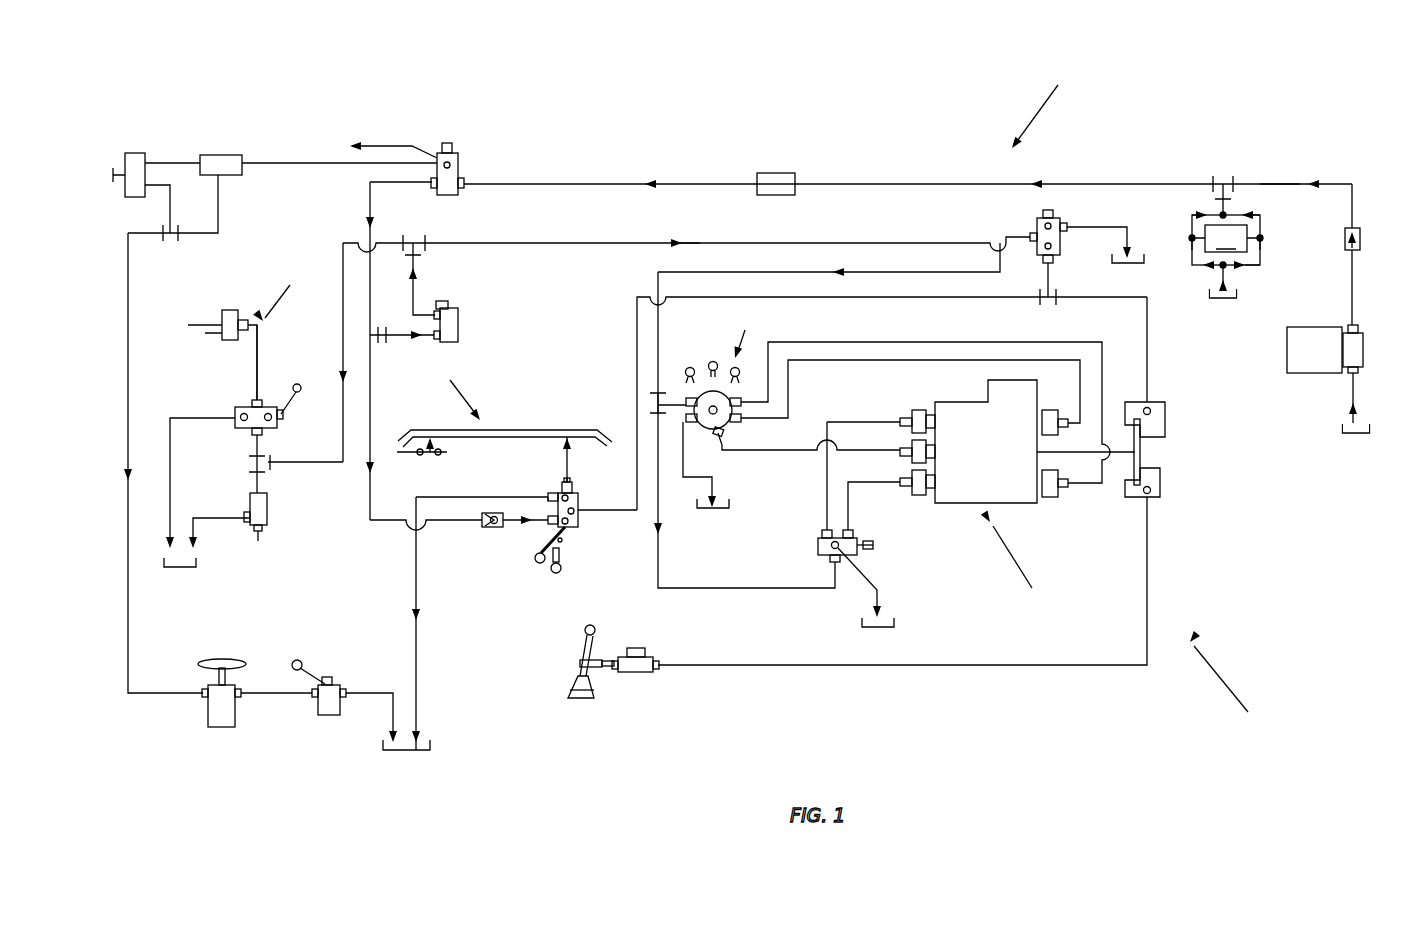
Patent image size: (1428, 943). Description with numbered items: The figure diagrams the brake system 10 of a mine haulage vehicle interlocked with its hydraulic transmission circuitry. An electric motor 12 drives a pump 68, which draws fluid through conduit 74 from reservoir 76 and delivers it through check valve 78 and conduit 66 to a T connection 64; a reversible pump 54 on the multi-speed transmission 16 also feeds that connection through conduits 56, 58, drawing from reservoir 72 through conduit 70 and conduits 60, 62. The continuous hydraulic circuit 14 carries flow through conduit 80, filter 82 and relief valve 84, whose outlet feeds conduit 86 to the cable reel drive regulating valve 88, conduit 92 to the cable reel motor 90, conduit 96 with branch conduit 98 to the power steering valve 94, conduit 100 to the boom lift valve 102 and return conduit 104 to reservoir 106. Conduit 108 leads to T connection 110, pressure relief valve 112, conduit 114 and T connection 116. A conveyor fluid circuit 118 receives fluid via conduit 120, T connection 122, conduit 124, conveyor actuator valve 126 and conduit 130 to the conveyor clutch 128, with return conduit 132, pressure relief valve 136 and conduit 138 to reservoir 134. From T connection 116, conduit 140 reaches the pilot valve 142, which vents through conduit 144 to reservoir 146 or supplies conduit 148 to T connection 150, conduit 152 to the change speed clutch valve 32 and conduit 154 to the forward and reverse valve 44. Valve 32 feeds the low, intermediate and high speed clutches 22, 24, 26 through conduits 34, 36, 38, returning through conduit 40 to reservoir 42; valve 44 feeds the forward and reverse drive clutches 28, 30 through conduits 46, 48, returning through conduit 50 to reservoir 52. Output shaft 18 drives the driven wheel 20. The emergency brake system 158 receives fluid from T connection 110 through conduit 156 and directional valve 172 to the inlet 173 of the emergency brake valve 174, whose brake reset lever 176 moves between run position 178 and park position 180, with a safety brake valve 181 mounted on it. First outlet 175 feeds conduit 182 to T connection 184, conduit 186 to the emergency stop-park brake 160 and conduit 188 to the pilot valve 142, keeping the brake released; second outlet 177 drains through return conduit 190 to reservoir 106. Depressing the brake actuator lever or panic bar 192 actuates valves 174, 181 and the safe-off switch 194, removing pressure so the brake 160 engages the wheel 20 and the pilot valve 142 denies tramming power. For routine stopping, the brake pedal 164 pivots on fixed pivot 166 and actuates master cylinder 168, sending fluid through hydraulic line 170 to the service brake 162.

The hydraulic system 10 is at (1230, 681).
The electric motor 12 is at (1287, 339).
The continuous hydraulic circuit 14 is at (1039, 104).
The multi-speed transmission 16 is at (992, 492).
The output shaft 18 is at (1097, 453).
The driven wheel 20 is at (1142, 456).
The low speed clutch 22 is at (1058, 497).
The intermediate speed clutch 24 is at (1054, 408).
The high speed clutch 26 is at (900, 453).
The forward drive clutch 28 is at (918, 408).
The reverse drive clutch 30 is at (918, 497).
The change speed clutch valve 32 is at (745, 328).
The conduit 34 is at (945, 342).
The conduit 36 is at (843, 361).
The conduit 38 is at (757, 451).
The return conduit 40 is at (686, 430).
The reservoir 42 is at (729, 508).
The forward and reverse valve 44 is at (817, 546).
The conduit 46 is at (826, 502).
The conduit 48 is at (850, 498).
The return conduit 50 is at (881, 596).
The reservoir 52 is at (898, 625).
The pump 54 is at (1226, 240).
The conduit 56 is at (1192, 218).
The conduit 58 is at (1262, 218).
The conduit 60 is at (1190, 240).
The conduit 62 is at (1262, 240).
The T connection 64 is at (1226, 178).
The conduit 66 is at (1275, 183).
The pump 68 is at (1365, 342).
The conduit 70 is at (1228, 268).
The reservoir 72 is at (1222, 300).
The conduit 74 is at (1357, 381).
The reservoir 76 is at (1372, 426).
The check valve 78 is at (1360, 238).
The conduit 80 is at (940, 183).
The filter 82 is at (780, 172).
The relief valve 84 is at (459, 153).
The conduit 86 is at (300, 162).
The cable reel drive regulating valve 88 is at (228, 154).
The cable reel motor 90 is at (136, 152).
The conduit 92 is at (160, 162).
The power steering valve 94 is at (218, 728).
The conduit 96 is at (127, 292).
The branch conduit 98 is at (222, 188).
The conduit 100 is at (281, 695).
The boom lift valve 102 is at (330, 717).
The return conduit 104 is at (371, 690).
The reservoir 106 is at (416, 752).
The conduit 108 is at (368, 198).
The T connection 110 is at (380, 326).
The pressure relief valve 112 is at (458, 316).
The conduit 114 is at (416, 292).
The T connection 116 is at (410, 240).
The fluid circuit 118 is at (280, 287).
The conduit 120 is at (341, 318).
The T connection 122 is at (270, 464).
The conduit 124 is at (255, 440).
The conveyor actuator valve 126 is at (237, 405).
The conveyor clutch 128 is at (215, 310).
The conduit 130 is at (254, 346).
The return conduit 132 is at (168, 450).
The reservoir 134 is at (200, 566).
The pressure relief valve 136 is at (268, 515).
The conduit 138 is at (215, 518).
The conduit 140 is at (778, 242).
The pilot valve 142 is at (1033, 212).
The conduit 144 is at (1079, 228).
The reservoir 146 is at (1130, 266).
The conduit 148 is at (660, 270).
The T connection 150 is at (656, 402).
The conduit 152 is at (686, 401).
The conduit 154 is at (738, 588).
The conduit 156 is at (372, 360).
The emergency brake system 158 is at (454, 388).
The emergency stop-park brake 160 is at (1167, 408).
The service brake 162 is at (1162, 486).
The brake pedal 164 is at (596, 650).
The fixed pivot 166 is at (572, 690).
The master cylinder 168 is at (648, 673).
The hydraulic line 170 is at (978, 668).
The directional valve 172 is at (485, 528).
The inlet 173 is at (579, 521).
The emergency brake valve 174 is at (572, 481).
The first outlet 175 is at (580, 507).
The brake reset lever 176 is at (575, 533).
The second outlet 177 is at (560, 492).
The run position 178 is at (558, 574).
The park position 180 is at (535, 558).
The safety brake valve 181 is at (548, 500).
The conduit 182 is at (636, 345).
The T connection 184 is at (1051, 299).
The conduit 186 is at (1150, 333).
The conduit 188 is at (1050, 270).
The return conduit 190 is at (418, 635).
The brake actuator lever 192 is at (562, 428).
The safe-off switch 194 is at (448, 452).